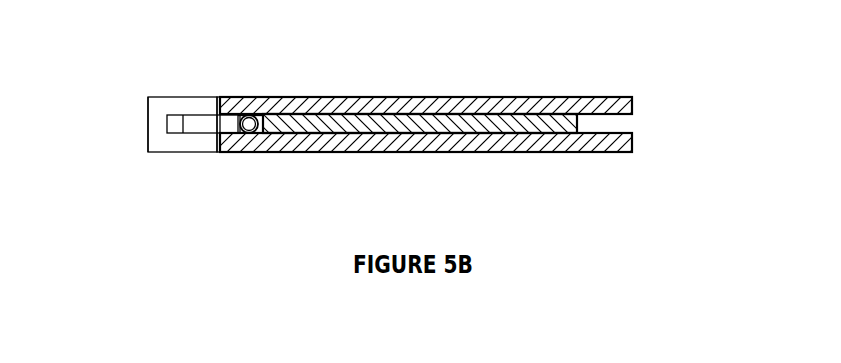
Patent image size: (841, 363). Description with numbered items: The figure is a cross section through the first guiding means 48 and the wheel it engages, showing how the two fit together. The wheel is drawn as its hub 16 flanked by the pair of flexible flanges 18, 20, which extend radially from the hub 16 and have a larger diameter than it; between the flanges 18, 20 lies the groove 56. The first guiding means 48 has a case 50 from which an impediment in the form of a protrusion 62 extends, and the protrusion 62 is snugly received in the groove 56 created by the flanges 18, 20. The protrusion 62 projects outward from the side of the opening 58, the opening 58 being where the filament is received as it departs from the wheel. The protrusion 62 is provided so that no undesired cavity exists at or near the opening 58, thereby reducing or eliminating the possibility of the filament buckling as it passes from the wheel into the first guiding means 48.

The hub 16 is at (578, 118).
The flexible flange 18 is at (610, 104).
The flexible flange 20 is at (615, 142).
The first guiding means 48 is at (147, 129).
The case 50 is at (158, 110).
The groove 56 is at (268, 134).
The opening 58 is at (249, 128).
The protrusion 62 is at (208, 126).